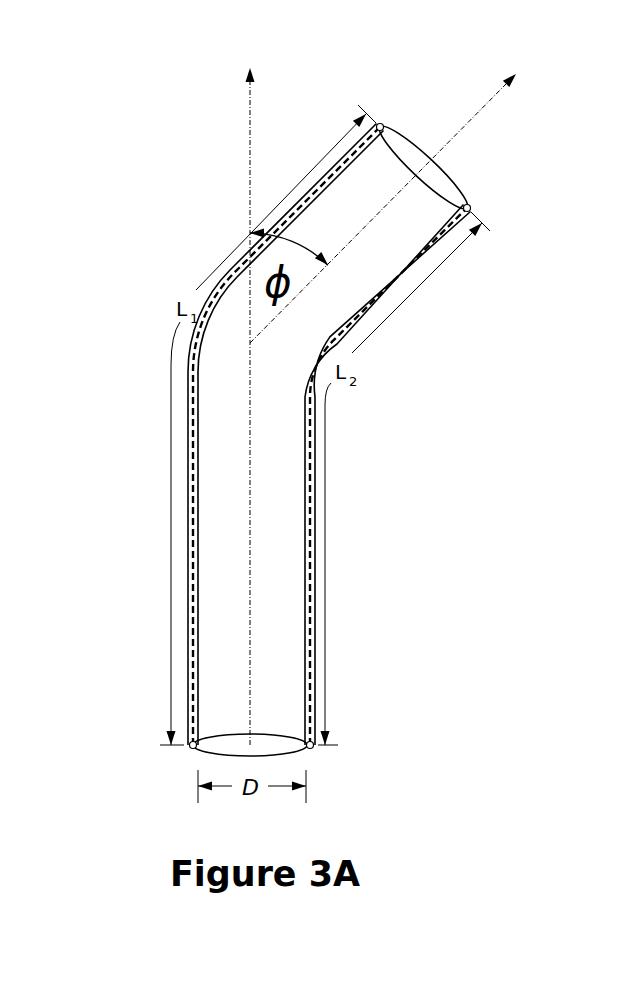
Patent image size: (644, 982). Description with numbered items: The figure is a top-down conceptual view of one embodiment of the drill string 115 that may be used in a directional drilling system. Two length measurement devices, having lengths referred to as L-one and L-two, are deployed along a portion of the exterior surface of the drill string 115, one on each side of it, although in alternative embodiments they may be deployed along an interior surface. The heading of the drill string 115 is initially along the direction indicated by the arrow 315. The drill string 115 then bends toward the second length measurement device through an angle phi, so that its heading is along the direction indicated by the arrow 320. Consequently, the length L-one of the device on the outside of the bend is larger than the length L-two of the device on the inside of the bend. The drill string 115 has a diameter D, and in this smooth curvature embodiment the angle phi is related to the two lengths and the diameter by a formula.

The drill string 115 is at (318, 683).
The arrow 315 is at (250, 148).
The arrow 320 is at (466, 130).